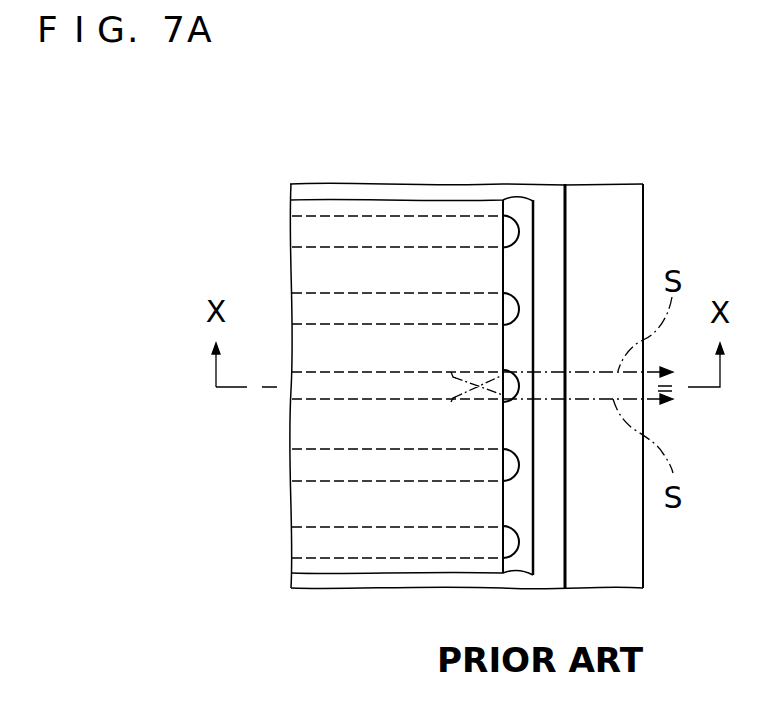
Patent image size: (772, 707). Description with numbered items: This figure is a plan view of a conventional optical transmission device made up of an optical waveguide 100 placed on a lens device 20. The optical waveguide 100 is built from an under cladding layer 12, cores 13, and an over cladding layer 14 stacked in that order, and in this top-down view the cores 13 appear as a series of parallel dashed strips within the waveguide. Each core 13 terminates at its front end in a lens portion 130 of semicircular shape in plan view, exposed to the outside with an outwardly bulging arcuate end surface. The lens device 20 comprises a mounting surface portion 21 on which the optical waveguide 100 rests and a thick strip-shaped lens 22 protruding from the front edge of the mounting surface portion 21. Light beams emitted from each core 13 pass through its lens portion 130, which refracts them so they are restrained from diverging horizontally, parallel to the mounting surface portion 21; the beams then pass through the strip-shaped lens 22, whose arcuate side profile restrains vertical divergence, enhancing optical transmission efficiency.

The optical waveguide 100 is at (308, 98).
The lens device 20 is at (565, 98).
The over cladding layer 14 is at (328, 202).
The cores 13 is at (398, 305).
The under cladding layer 12 is at (520, 228).
The lens portion 130 is at (518, 300).
The mounting surface portion 21 is at (554, 193).
The strip-shaped lens 22 is at (607, 195).